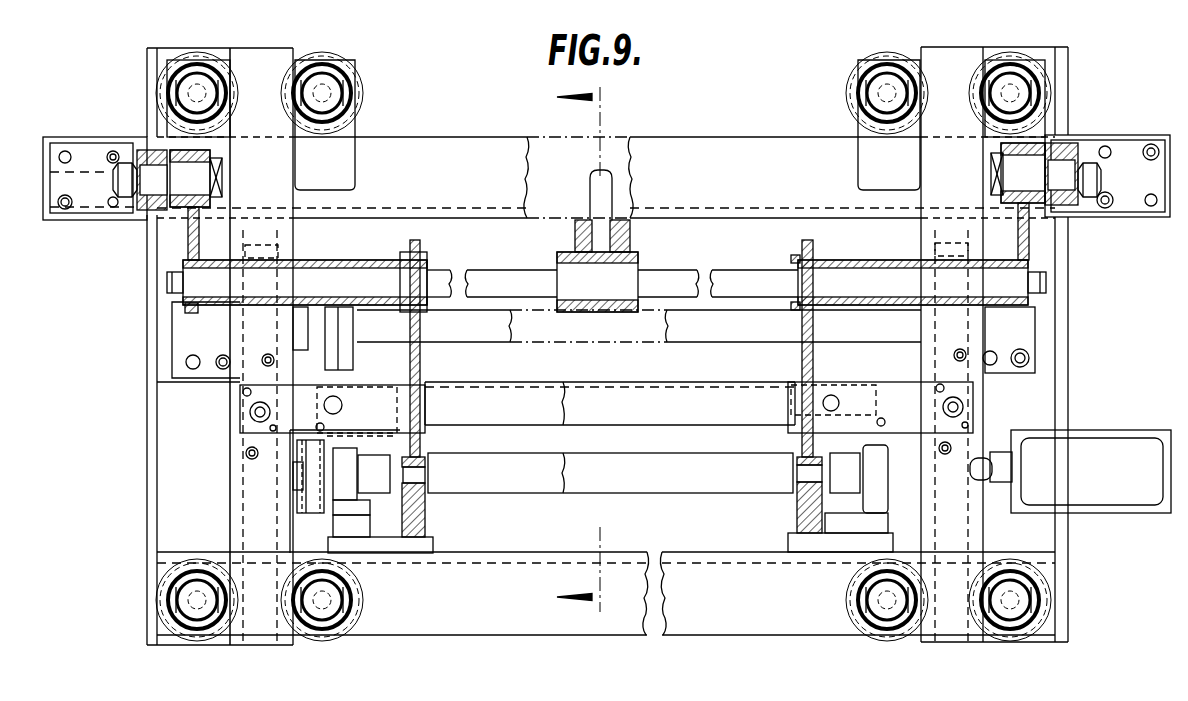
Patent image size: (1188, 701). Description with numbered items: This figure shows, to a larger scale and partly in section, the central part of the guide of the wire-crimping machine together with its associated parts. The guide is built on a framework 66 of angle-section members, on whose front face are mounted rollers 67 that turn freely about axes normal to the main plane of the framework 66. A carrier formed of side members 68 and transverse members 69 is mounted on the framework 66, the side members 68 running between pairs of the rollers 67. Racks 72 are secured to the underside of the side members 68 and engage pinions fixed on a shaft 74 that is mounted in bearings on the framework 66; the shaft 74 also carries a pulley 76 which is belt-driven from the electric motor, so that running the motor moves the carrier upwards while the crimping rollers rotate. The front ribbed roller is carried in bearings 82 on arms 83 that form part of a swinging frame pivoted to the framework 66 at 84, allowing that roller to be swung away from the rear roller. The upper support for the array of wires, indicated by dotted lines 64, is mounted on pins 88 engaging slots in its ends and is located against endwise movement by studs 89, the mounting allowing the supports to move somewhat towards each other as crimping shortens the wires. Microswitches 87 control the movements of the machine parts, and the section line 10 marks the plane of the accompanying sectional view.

The section line 10- 10 is at (601, 347).
The upper support 64 is at (622, 385).
The framework 66 is at (517, 618).
The rollers 67 is at (990, 72).
The side members 68 is at (258, 65).
The transverse members 69 is at (900, 403).
The racks 72 is at (242, 535).
The shaft 74 is at (729, 341).
The pulley 76 is at (342, 323).
The bearings 82 is at (413, 477).
The arms 83 is at (420, 357).
The pivot 84 is at (157, 177).
The microswitches 87 is at (1116, 443).
The pins 88 is at (335, 403).
The studs 89 is at (318, 425).